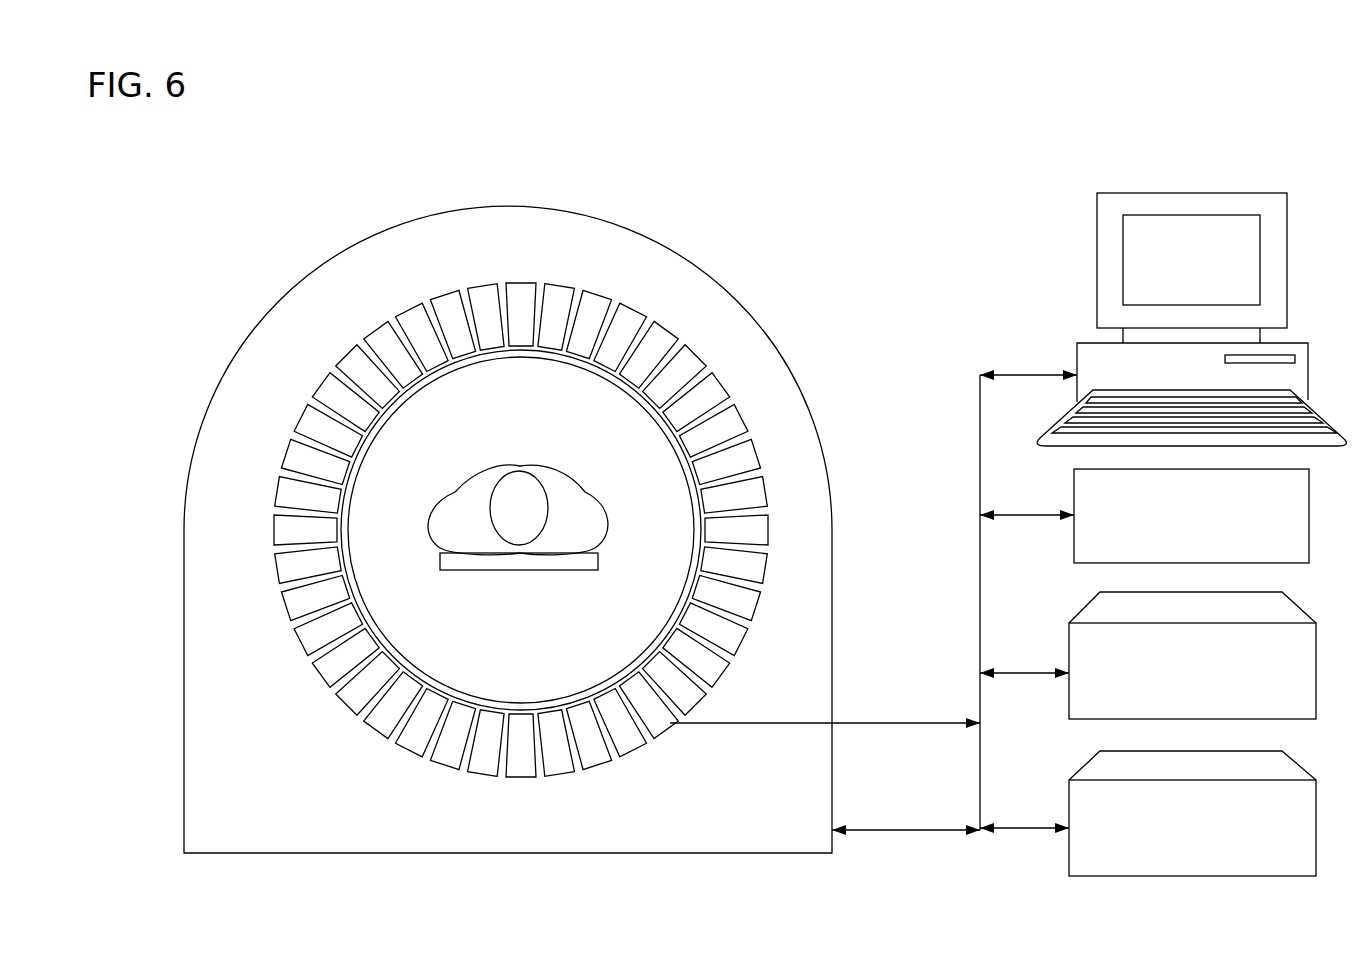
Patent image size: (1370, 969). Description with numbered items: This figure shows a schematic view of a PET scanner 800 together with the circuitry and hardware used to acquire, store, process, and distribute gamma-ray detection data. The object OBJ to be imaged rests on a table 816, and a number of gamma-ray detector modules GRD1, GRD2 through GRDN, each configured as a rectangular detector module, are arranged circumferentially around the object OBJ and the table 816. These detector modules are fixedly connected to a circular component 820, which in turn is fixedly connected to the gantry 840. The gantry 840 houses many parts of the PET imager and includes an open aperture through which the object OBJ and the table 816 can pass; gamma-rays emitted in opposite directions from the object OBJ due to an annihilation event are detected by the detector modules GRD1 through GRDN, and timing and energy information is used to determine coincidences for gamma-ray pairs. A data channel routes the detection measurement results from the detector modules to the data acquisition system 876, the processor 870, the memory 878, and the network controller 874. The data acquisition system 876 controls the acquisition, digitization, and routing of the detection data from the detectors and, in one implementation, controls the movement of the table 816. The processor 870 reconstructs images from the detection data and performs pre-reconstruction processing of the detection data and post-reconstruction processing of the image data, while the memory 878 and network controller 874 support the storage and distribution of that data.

The PET scanner 800 is at (897, 140).
The gantry 840 is at (757, 318).
The circular component 820 is at (506, 470).
The gamma-ray detector module GRD1 is at (524, 283).
The gamma-ray detector module GRD2 is at (562, 286).
The gamma-ray detector module GRDN is at (476, 286).
The object OBJ is at (492, 473).
The table 816 is at (488, 571).
The processor 870 is at (1163, 319).
The network controller 874 is at (1144, 516).
The memory 878 is at (1148, 655).
The data acquisition system 876 is at (1148, 813).